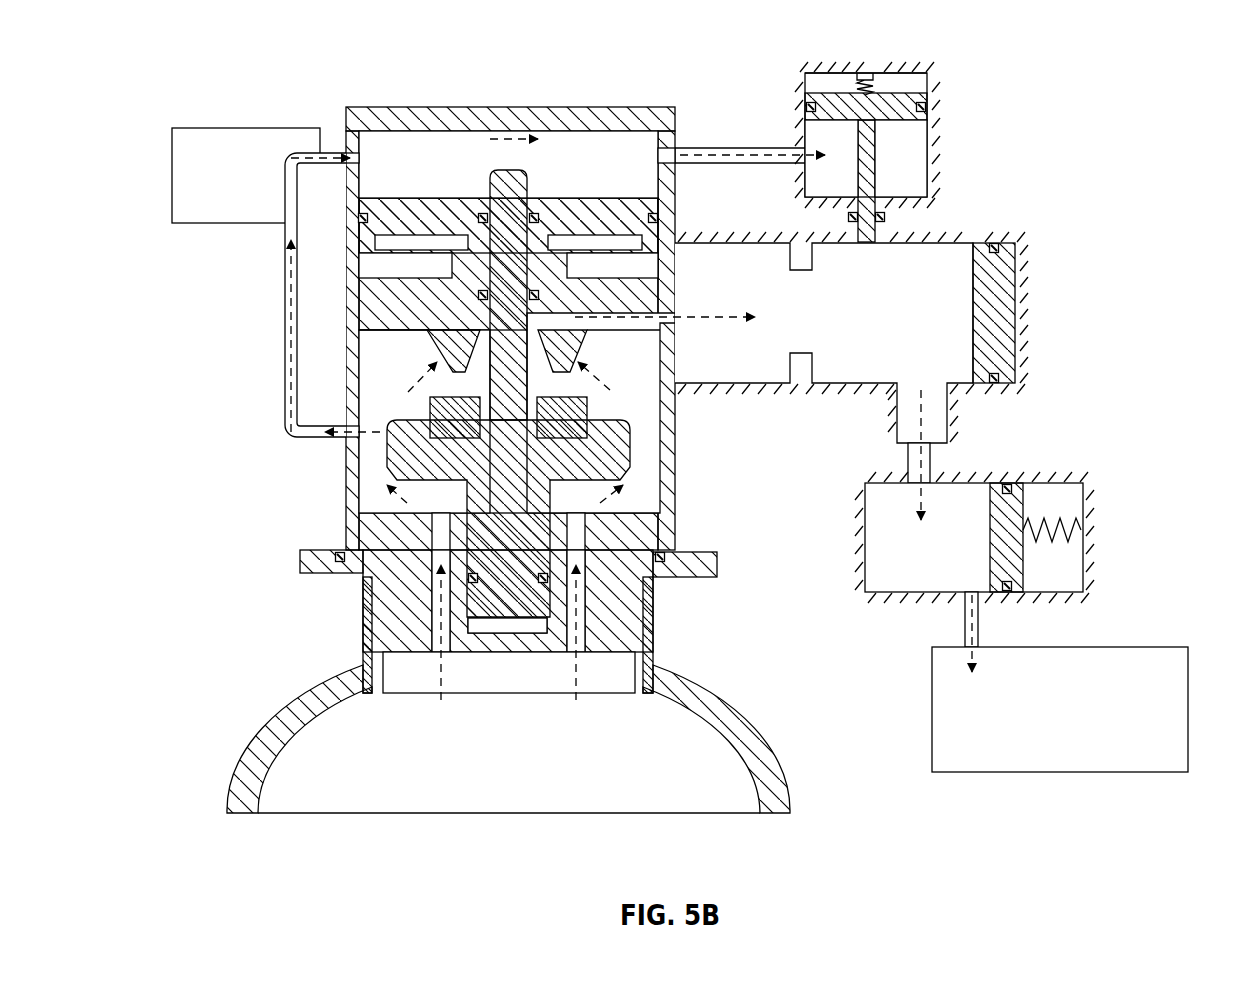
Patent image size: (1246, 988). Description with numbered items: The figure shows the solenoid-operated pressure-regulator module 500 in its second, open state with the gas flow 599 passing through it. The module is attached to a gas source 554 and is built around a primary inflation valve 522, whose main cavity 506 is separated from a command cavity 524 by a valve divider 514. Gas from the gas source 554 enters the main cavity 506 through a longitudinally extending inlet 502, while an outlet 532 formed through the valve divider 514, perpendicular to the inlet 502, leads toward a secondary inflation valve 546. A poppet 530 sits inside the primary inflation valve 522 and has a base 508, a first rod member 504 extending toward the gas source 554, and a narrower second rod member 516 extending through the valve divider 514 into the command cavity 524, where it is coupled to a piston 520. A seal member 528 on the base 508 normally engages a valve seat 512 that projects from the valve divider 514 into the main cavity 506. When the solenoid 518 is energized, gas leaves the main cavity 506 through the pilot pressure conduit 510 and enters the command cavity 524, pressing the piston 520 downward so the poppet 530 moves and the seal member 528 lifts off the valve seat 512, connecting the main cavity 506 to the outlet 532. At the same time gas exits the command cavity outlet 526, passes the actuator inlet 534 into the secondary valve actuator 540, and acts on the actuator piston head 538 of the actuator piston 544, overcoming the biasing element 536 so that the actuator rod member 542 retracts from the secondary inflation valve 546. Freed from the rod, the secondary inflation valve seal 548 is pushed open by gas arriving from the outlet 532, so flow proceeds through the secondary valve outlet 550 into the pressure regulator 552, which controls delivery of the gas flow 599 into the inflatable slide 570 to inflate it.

The solenoid-operated pressure-regulator module 500 is at (1140, 112).
The inlet 502 is at (440, 566).
The first rod member 504 is at (430, 556).
The main cavity 506 is at (424, 421).
The base 508 is at (397, 433).
The pilot pressure conduit 510 is at (287, 395).
The valve seat 512 is at (450, 340).
The valve divider 514 is at (377, 293).
The second rod member 516 is at (520, 207).
The solenoid 518 is at (172, 181).
The piston 520 is at (390, 198).
The primary inflation valve 522 is at (392, 107).
The command cavity 524 is at (508, 164).
The command cavity outlet 526 is at (690, 143).
The seal member 528 is at (565, 432).
The poppet 530 is at (610, 433).
The outlet 532 is at (652, 326).
The actuator inlet 534 is at (795, 143).
The biasing element 536 is at (862, 85).
The actuator piston head 538 is at (905, 93).
The secondary valve actuator 540 is at (930, 90).
The actuator rod member 542 is at (880, 125).
The actuator piston 544 is at (878, 157).
The secondary inflation valve 546 is at (1018, 305).
The secondary inflation valve seal 548 is at (973, 323).
The secondary valve outlet 550 is at (955, 455).
The pressure regulator 552 is at (1083, 518).
The gas source 554 is at (432, 813).
The inflatable slide 570 is at (1155, 647).
The gas flow 599 is at (515, 130).